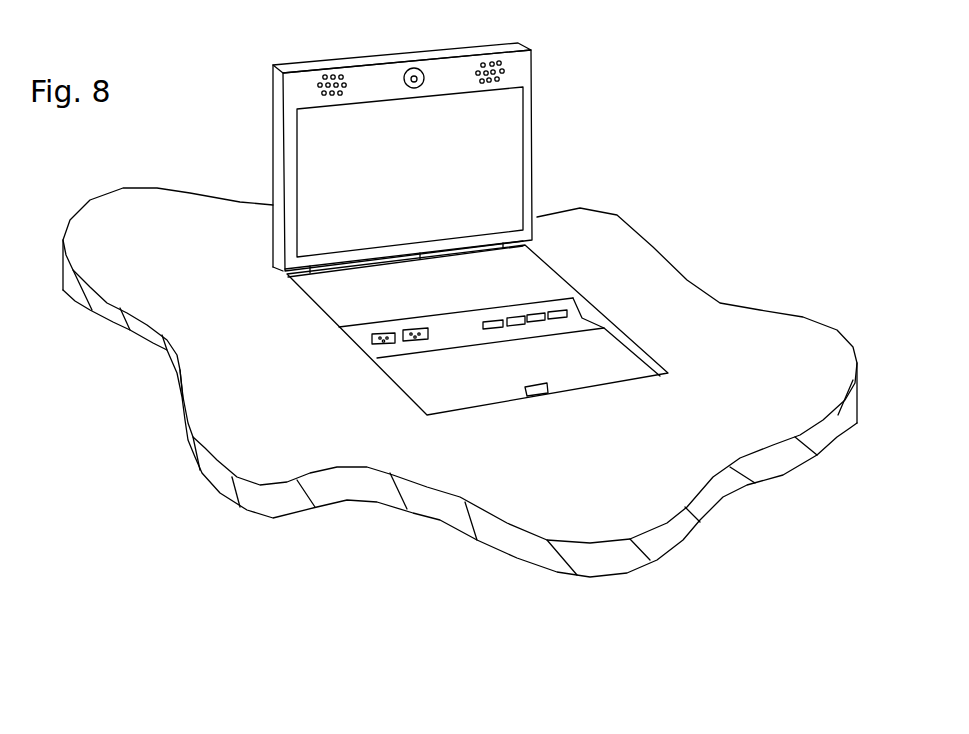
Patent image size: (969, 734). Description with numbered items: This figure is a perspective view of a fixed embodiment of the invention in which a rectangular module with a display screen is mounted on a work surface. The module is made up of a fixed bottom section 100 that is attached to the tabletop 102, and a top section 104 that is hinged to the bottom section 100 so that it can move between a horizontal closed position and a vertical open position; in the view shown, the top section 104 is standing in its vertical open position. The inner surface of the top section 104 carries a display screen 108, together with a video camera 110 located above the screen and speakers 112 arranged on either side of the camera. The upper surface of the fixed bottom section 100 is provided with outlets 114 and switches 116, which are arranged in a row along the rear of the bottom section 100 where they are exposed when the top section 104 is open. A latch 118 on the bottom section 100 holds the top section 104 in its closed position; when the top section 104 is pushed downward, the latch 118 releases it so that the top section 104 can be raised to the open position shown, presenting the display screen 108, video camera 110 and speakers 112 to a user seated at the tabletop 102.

The fixed bottom section 100 is at (423, 387).
The tabletop 102 is at (297, 437).
The top section 104 is at (522, 69).
The display screen 108 is at (330, 180).
The video camera 110 is at (414, 77).
The speakers 112 is at (332, 75).
The outlets 114 is at (378, 335).
The switches 116 is at (510, 320).
The latch 118 is at (527, 387).